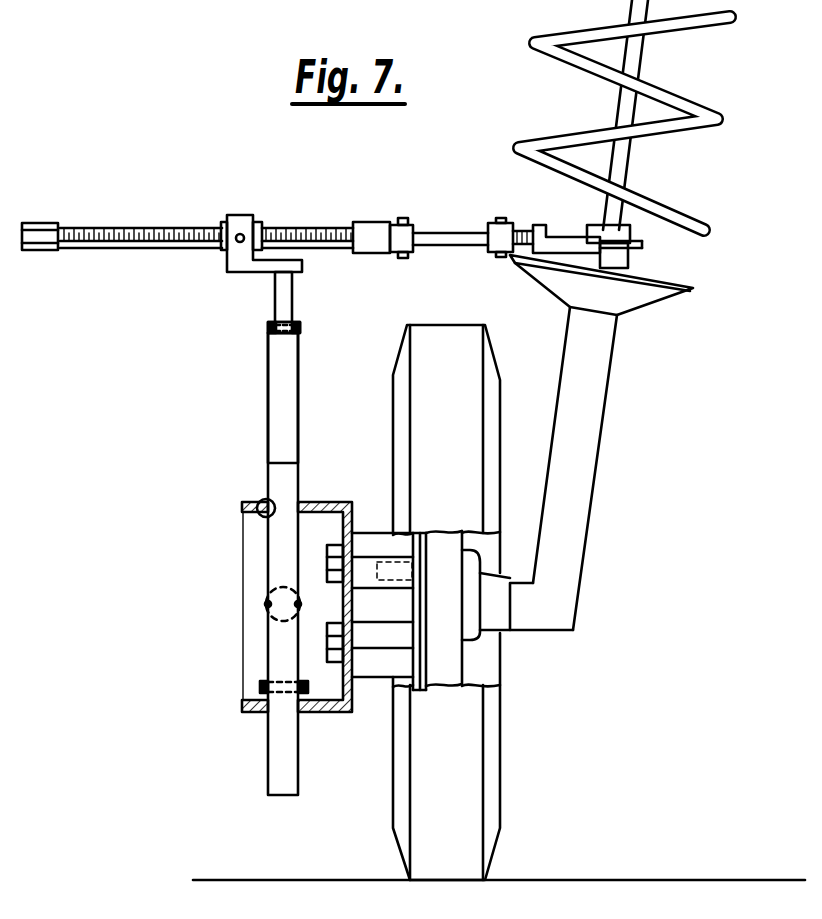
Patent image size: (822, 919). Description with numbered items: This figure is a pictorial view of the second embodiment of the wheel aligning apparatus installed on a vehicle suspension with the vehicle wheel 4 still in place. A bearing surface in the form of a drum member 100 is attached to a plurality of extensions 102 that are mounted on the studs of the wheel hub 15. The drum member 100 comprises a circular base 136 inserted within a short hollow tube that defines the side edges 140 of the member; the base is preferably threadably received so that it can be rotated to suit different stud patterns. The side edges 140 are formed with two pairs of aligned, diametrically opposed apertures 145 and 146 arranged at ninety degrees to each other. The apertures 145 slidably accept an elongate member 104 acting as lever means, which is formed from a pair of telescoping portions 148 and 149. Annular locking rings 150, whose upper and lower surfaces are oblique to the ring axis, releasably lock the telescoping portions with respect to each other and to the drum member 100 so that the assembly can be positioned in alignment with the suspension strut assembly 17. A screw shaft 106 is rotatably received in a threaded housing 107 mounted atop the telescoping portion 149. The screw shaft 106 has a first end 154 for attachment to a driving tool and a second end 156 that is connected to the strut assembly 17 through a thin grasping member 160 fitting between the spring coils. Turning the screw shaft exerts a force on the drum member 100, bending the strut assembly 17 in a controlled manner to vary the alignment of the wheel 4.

The vehicle wheel 4 is at (460, 790).
The wheel hub 15 is at (448, 642).
The strut assembly 17 is at (621, 152).
The drum member 100 is at (313, 724).
The extensions 102 is at (380, 672).
The elongate member 104 is at (272, 438).
The screw shaft 106 is at (166, 226).
The threaded housing 107 is at (241, 222).
The circular base 136 is at (362, 513).
The side edges 140 is at (258, 502).
The apertures 145 is at (268, 517).
The apertures 146 is at (262, 603).
The telescoping portion 148 is at (270, 380).
The telescoping portion 149 is at (273, 302).
The annular locking ring 150 is at (299, 330).
The first end 154 is at (36, 250).
The second end 156 is at (369, 224).
The grasping member 160 is at (559, 224).